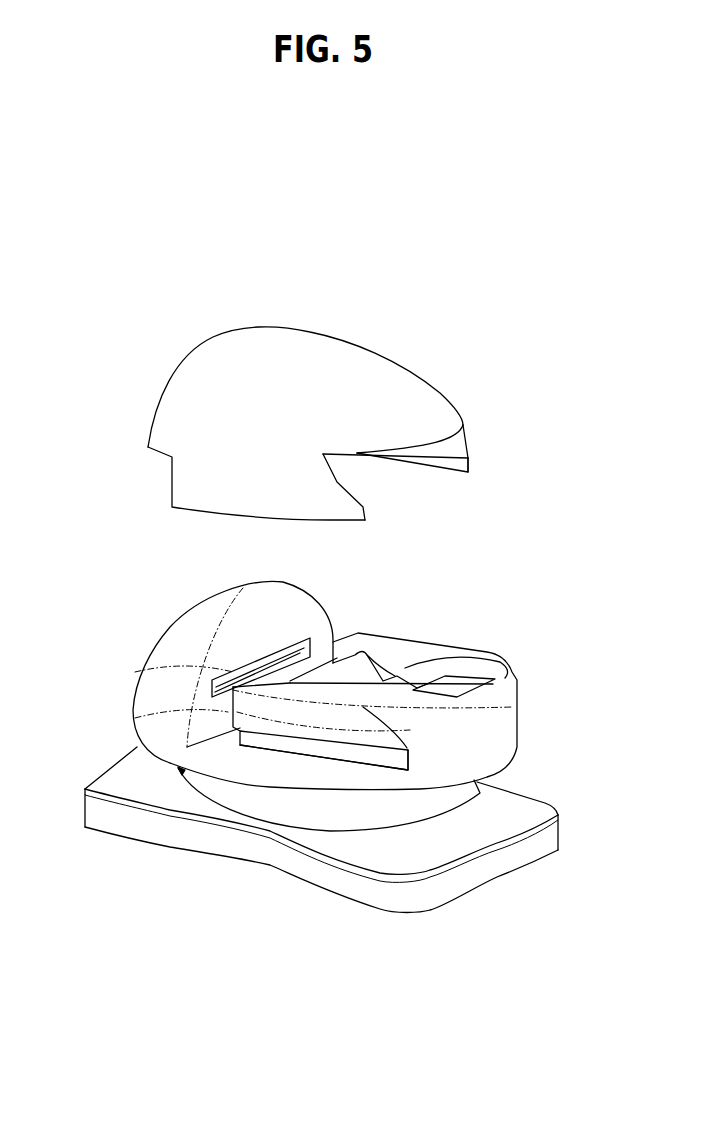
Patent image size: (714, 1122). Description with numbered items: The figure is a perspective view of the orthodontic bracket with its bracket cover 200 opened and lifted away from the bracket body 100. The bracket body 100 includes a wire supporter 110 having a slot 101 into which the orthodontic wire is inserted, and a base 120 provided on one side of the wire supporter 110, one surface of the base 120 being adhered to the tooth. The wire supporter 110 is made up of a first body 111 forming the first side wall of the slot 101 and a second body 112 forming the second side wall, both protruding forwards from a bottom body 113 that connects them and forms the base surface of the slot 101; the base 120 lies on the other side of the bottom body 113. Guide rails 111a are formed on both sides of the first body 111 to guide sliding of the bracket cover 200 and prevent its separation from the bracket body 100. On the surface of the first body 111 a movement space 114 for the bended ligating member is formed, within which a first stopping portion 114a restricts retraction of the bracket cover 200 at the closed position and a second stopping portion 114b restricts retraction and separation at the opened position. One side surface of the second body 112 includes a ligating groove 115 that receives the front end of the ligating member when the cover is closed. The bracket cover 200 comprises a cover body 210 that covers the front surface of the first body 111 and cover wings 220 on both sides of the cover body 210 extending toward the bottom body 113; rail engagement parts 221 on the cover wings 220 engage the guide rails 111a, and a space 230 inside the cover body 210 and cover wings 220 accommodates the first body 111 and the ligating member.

The bracket body 100 is at (322, 774).
The slot 101 is at (229, 716).
The wire supporter 110 is at (322, 767).
The first body 111 is at (507, 717).
The guide rails 111a is at (377, 756).
The second body 112 is at (180, 637).
The bottom body 113 is at (227, 768).
The movement space 114 is at (398, 647).
The first stopping portion 114a is at (455, 672).
The second stopping portion 114b is at (470, 670).
The ligating groove 115 is at (227, 673).
The base 120 is at (300, 862).
The bracket cover 200 is at (304, 438).
The cover body 210 is at (357, 353).
The cover wings 220 is at (468, 443).
The rail engagement parts 221 is at (457, 467).
The space 230 is at (365, 477).